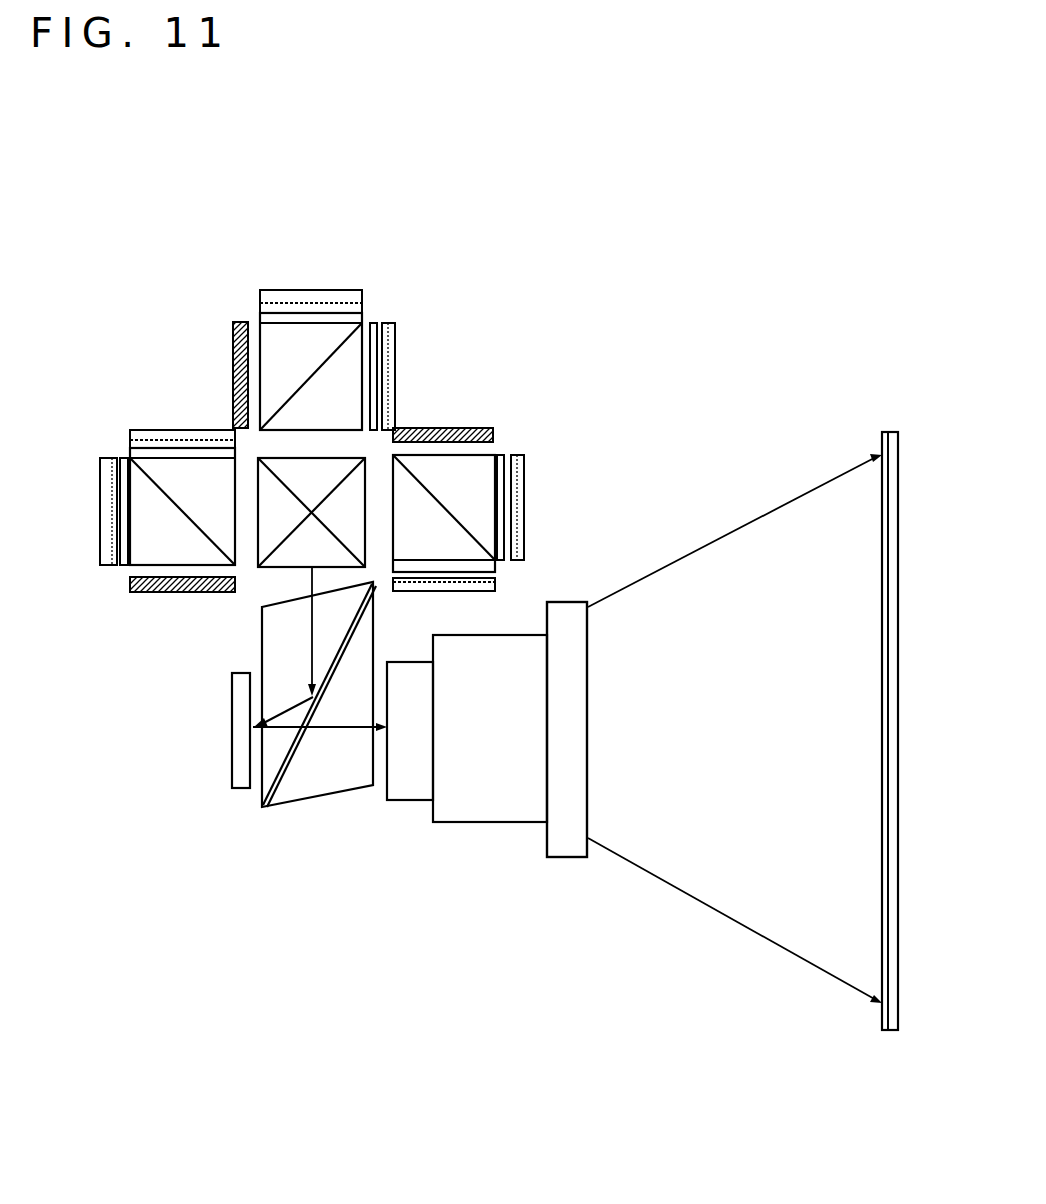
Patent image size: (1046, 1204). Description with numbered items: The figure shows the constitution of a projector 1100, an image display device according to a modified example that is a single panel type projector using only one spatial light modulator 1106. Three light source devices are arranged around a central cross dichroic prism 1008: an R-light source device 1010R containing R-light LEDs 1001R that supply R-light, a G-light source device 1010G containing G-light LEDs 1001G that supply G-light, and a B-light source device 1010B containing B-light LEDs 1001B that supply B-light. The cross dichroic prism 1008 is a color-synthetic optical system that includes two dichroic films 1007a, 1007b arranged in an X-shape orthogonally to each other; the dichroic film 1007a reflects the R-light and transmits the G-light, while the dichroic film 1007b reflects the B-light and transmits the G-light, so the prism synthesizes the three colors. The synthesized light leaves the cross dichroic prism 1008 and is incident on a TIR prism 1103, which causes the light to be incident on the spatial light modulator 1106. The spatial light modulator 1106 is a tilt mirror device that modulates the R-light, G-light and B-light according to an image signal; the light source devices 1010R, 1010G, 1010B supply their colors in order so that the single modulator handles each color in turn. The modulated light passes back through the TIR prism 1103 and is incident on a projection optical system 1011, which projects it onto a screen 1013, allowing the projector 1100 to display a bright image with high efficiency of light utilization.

The projector 1100 is at (629, 206).
The R-light source device 1010R is at (118, 350).
The G-light source device 1010G is at (368, 253).
The B-light source device 1010B is at (531, 450).
The R-light LED 1001R is at (118, 468).
The G-light LED 1001G is at (366, 296).
The B-light LED 1001B is at (498, 578).
The dichroic film 1007a is at (280, 462).
The dichroic film 1007b is at (250, 565).
The cross dichroic prism 1008 is at (275, 568).
The spatial light modulator 1106 is at (241, 768).
The TIR prism 1103 is at (305, 792).
The projection optical system 1011 is at (494, 812).
The screen 1013 is at (888, 432).